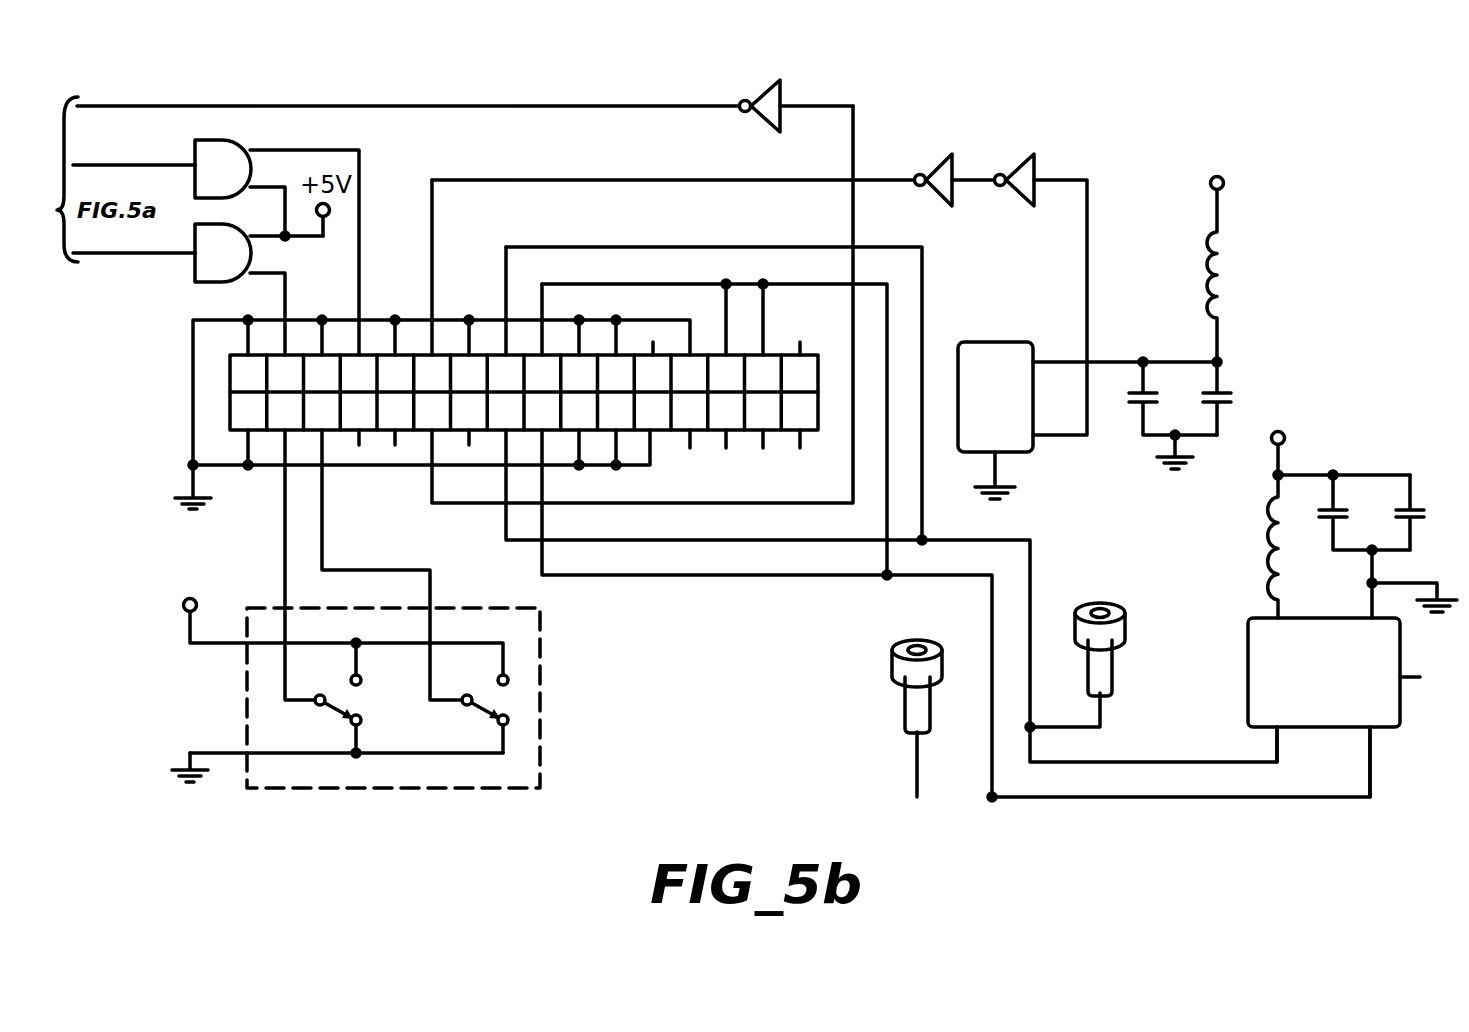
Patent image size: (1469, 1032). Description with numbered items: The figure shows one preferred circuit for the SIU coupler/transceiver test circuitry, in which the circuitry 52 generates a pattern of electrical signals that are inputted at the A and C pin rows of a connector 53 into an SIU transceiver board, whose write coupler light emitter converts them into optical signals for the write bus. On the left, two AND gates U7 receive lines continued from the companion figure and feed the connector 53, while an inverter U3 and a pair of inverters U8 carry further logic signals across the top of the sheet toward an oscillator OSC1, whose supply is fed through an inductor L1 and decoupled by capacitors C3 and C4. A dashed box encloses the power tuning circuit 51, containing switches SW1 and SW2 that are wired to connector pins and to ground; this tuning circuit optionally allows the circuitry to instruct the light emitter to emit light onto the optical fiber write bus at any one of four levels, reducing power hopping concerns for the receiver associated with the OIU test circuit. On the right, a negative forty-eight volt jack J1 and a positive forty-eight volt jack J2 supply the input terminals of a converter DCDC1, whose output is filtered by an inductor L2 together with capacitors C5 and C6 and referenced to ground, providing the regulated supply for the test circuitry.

The power tuning circuit 51 is at (377, 616).
The circuitry 52 is at (762, 698).
The 16-pin header connector 53 is at (693, 435).
The AND gates U7 is at (216, 247).
The inverter U3 is at (790, 118).
The inverters U8 is at (1000, 281).
The oscillator OSC1 is at (1087, 405).
The capacitor 0.1 C3 is at (1153, 413).
The capacitor 22uf C4 is at (1244, 396).
The capacitor 22uf C5 is at (1364, 512).
The capacitor 0.1 C6 is at (1428, 512).
The inductor 1.2uH L1 is at (1252, 266).
The inductor 20uH L2 is at (1268, 522).
The DC/DC converter DCDC1 is at (1352, 707).
The -48V jack J1 is at (906, 668).
The +48V jack J2 is at (1111, 633).
The switch 1 SW1 is at (316, 591).
The switch 2 SW2 is at (415, 591).